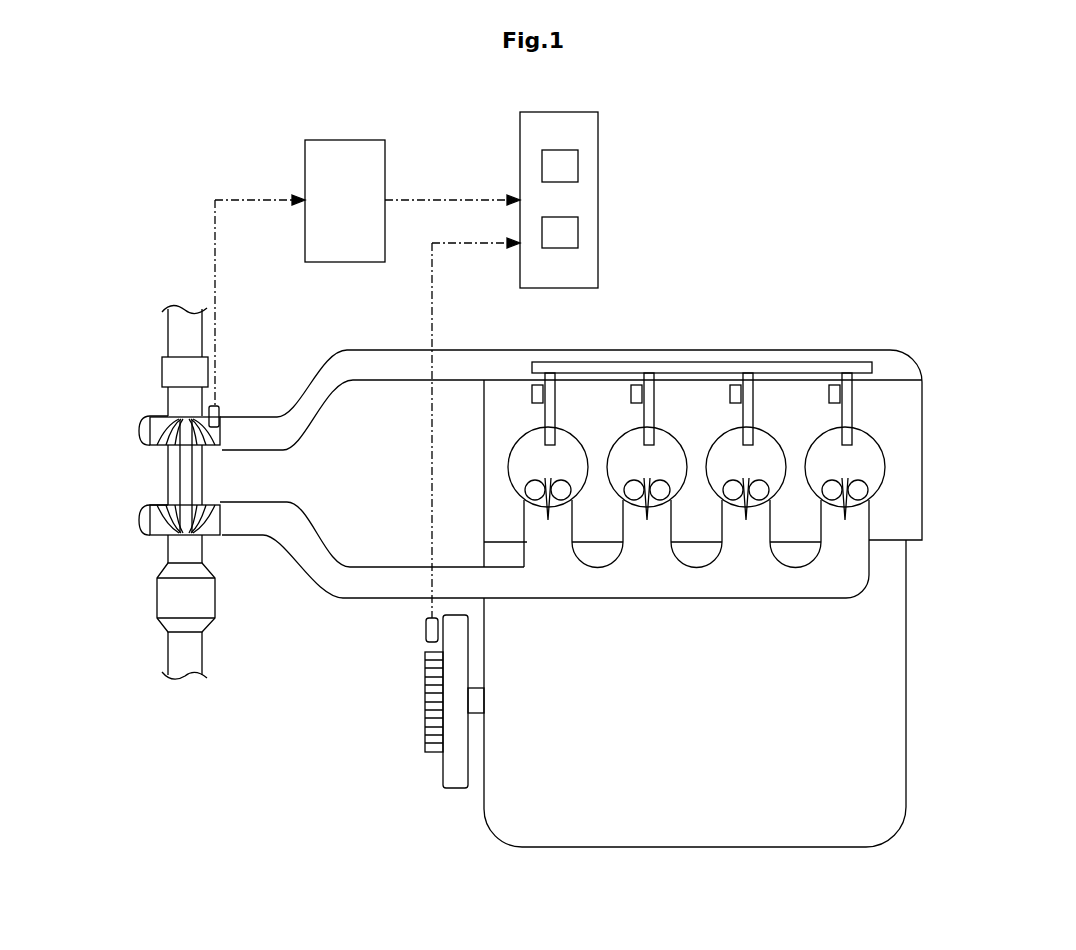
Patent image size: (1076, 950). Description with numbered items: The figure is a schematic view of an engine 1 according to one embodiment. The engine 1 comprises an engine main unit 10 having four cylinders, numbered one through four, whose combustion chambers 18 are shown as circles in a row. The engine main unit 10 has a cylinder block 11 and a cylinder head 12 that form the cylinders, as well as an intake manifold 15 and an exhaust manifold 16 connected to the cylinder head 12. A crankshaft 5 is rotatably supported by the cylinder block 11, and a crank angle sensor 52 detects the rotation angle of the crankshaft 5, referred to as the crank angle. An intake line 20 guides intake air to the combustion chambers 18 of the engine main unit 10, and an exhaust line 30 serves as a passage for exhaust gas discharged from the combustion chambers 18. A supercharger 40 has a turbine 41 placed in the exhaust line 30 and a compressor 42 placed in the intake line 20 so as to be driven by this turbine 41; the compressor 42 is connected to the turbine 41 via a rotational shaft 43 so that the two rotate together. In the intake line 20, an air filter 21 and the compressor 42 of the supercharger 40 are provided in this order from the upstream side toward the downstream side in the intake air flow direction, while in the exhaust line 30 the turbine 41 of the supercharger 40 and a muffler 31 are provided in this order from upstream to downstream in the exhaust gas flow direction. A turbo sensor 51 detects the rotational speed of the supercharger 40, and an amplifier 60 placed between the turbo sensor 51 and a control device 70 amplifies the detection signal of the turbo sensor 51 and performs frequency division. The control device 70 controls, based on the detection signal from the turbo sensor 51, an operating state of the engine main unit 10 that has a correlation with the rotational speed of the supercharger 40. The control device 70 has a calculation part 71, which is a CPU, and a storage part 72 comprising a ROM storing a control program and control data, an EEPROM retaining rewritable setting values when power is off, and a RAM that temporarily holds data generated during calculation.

The engine 1 is at (1008, 217).
The crankshaft 5 is at (478, 713).
The engine main unit 10 is at (943, 849).
The cylinder block 11 is at (900, 700).
The cylinder head 12 is at (915, 470).
The intake manifold 15 is at (660, 350).
The exhaust manifold 16 is at (698, 598).
The combustion chamber 18 is at (556, 473).
The intake line 20 is at (302, 354).
The air filter 21 is at (162, 364).
The exhaust line 30 is at (310, 617).
The muffler 31 is at (157, 600).
The supercharger 40 is at (96, 478).
The turbine 41 is at (141, 512).
The compressor 42 is at (141, 428).
The rotational shaft 43 is at (193, 478).
The turbo sensor 51 is at (219, 406).
The crank angle sensor 52 is at (426, 630).
The amplifier 60 is at (305, 168).
The control device 70 is at (520, 153).
The calculation part 71 is at (578, 168).
The storage part 72 is at (578, 236).